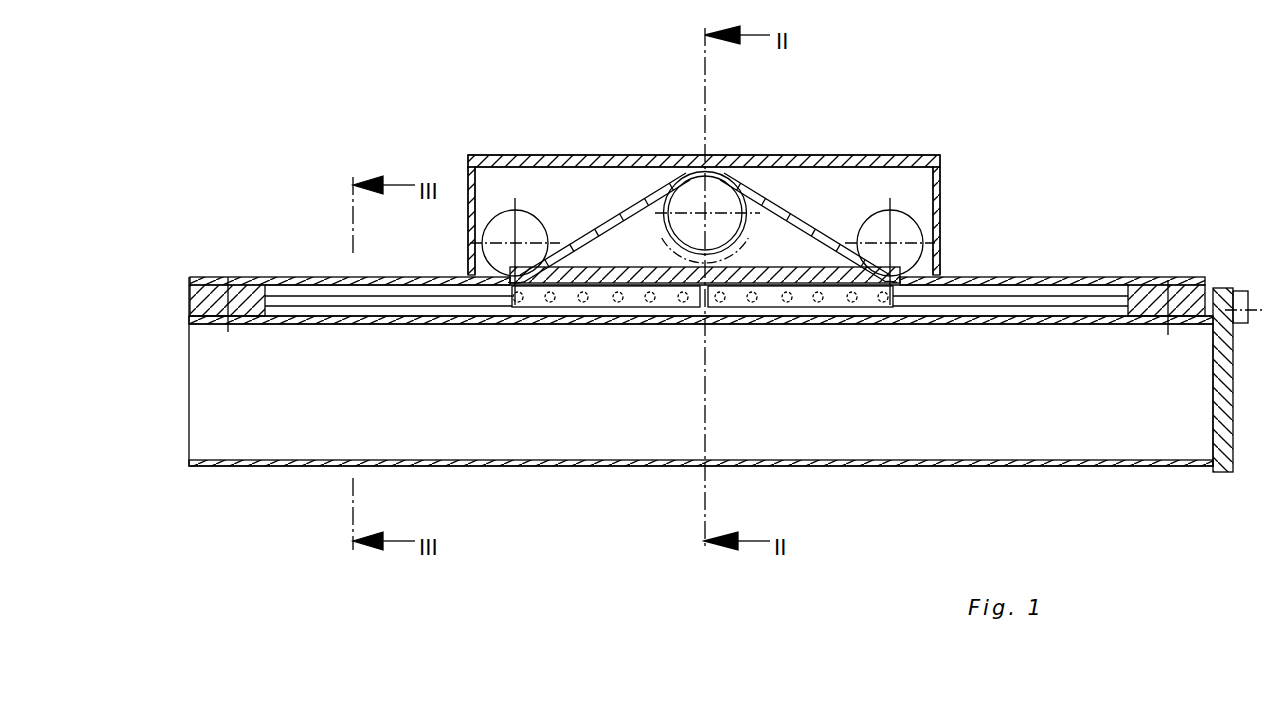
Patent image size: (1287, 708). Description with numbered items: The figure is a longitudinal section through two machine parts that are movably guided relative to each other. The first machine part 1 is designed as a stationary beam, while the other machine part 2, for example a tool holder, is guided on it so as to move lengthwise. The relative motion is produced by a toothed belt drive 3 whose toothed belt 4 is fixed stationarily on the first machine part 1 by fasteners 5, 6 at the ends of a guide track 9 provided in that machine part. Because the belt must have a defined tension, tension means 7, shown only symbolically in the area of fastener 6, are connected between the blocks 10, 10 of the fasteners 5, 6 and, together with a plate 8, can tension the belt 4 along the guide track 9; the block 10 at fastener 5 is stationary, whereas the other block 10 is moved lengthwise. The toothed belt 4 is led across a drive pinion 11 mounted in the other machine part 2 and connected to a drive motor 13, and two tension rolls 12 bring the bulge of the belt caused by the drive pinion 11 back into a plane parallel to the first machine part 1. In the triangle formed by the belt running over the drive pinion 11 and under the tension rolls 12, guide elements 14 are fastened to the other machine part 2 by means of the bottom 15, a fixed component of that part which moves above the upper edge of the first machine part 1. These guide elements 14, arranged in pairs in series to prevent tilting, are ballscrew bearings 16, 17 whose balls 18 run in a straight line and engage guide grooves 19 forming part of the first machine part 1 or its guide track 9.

The first machine part 1 is at (298, 325).
The other machine part 2 is at (832, 160).
The toothed belt drive 3 is at (605, 222).
The toothed belt 4 is at (322, 277).
The fastener 5 is at (227, 277).
The fastener 6 is at (1170, 333).
The tension means 7 is at (1243, 298).
The plate 8 is at (1230, 356).
The guide track 9 is at (445, 306).
The block 10 is at (200, 298).
The drive pinion 11 is at (716, 197).
The tension roll 12 is at (500, 217).
The drive motor 13 is at (665, 190).
The guide element 14 is at (650, 302).
The bottom 15 is at (625, 275).
The ballscrew bearing 16 is at (548, 302).
The ballscrew bearing 17 is at (787, 302).
The ball 18 is at (883, 302).
The guide groove 19 is at (380, 298).